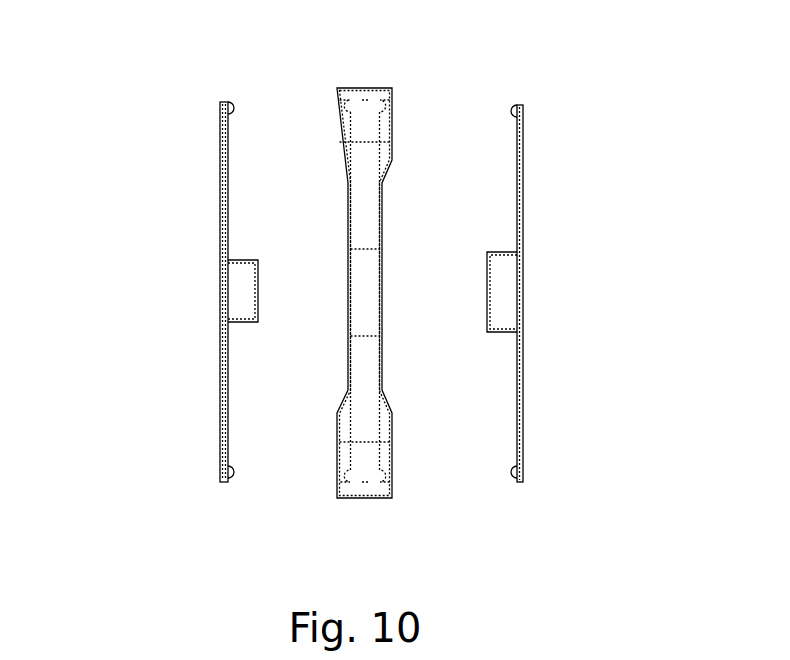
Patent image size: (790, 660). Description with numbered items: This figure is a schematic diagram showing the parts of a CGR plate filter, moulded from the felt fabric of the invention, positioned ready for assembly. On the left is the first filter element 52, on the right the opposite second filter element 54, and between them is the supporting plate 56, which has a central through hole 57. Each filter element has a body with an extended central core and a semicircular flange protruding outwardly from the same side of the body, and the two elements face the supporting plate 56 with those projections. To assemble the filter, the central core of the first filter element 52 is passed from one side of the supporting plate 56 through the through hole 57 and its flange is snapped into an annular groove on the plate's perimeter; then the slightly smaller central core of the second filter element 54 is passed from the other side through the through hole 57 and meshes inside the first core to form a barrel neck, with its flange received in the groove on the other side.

The first filter element 52 is at (163, 264).
The second filter element 54 is at (584, 273).
The supporting plate 56 is at (390, 328).
The central through hole 57 is at (365, 292).